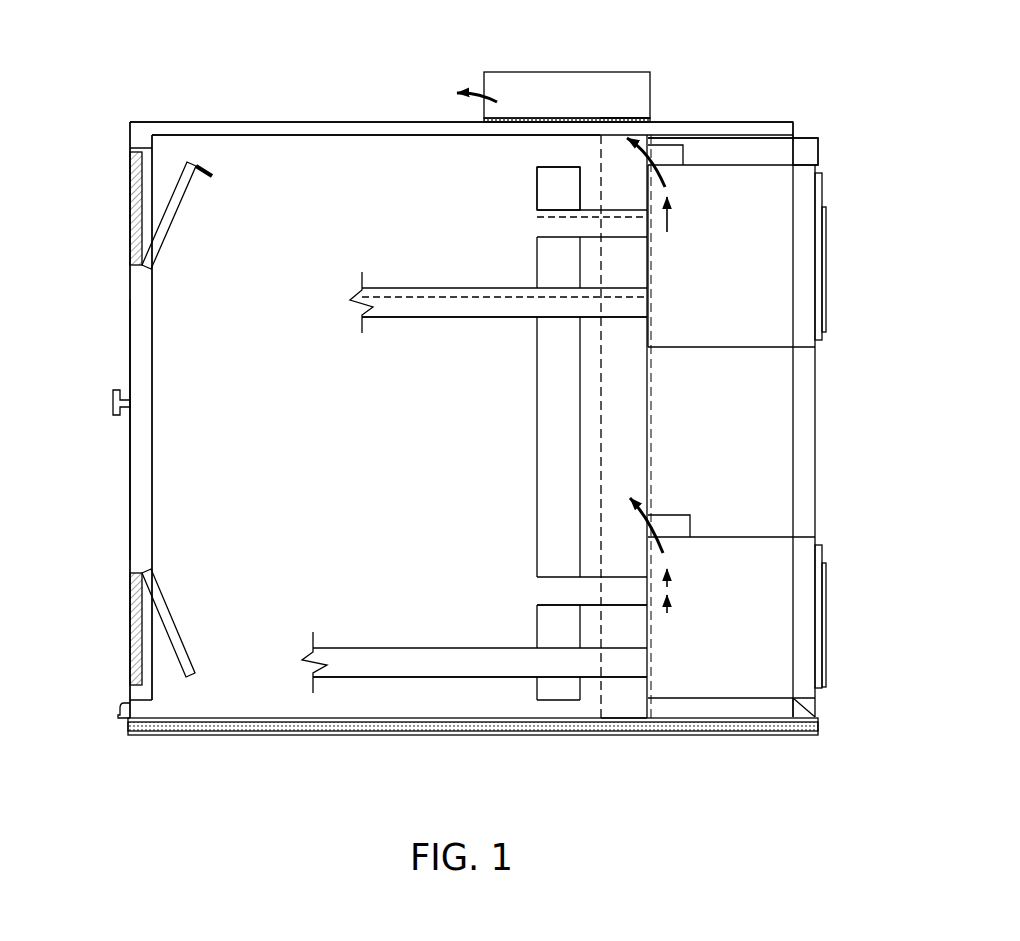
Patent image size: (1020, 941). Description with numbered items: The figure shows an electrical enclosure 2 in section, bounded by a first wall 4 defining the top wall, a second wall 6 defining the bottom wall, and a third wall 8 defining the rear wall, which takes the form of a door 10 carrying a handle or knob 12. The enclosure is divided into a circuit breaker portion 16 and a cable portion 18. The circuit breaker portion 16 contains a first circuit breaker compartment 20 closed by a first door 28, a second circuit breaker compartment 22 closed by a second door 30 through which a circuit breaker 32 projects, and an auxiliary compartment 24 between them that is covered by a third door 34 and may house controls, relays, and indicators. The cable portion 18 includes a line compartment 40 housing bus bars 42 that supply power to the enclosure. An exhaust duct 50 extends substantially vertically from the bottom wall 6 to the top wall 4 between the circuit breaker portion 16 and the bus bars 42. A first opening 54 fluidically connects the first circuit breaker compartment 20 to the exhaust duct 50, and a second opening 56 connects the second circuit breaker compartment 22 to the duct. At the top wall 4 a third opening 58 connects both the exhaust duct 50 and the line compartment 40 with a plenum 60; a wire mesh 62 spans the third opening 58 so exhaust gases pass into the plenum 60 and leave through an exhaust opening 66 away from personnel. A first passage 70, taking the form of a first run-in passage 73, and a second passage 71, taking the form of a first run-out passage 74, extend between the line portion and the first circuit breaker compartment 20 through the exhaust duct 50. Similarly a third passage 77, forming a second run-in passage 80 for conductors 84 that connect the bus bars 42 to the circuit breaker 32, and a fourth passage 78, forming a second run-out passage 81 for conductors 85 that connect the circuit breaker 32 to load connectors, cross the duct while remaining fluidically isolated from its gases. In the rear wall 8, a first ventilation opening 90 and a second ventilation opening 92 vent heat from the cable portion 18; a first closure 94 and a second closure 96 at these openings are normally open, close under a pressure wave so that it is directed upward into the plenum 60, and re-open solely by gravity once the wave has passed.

The electrical enclosure 2 is at (158, 84).
The first wall 4 is at (297, 116).
The second wall 6 is at (293, 740).
The third wall 8 is at (118, 478).
The door 10 is at (130, 505).
The handle or knob 12 is at (113, 400).
The circuit breaker portion 16 is at (810, 157).
The cable portion 18 is at (240, 126).
The first circuit breaker compartment 20 is at (772, 644).
The second circuit breaker compartment 22 is at (773, 319).
The auxiliary compartment 24 is at (768, 484).
The first door 28 is at (818, 563).
The second door 30 is at (824, 184).
The circuit breaker 32 is at (838, 226).
The third door 34 is at (812, 430).
The line compartment 40 is at (331, 168).
The bus bars 42 is at (543, 541).
The exhaust duct 50 is at (595, 506).
The first passage or opening 54 is at (666, 553).
The second passage or opening 56 is at (667, 186).
The third opening or outlet 58 is at (602, 107).
The plenum 60 is at (481, 56).
The wire mesh 62 is at (556, 117).
The exhaust opening 66 is at (484, 84).
The first passage 70 is at (558, 571).
The second passage 71 is at (486, 682).
The first run-in passage 73 is at (563, 597).
The first run-out passage 74 is at (400, 680).
The third passage 77 is at (558, 207).
The fourth passage 78 is at (502, 332).
The second run-in passage 80 is at (594, 232).
The second run-out passage 81 is at (445, 318).
The conductors 84 is at (557, 221).
The conductors 85 is at (412, 287).
The first ventilation opening 90 is at (125, 640).
The second ventilation opening 92 is at (124, 188).
The first closure 94 is at (186, 636).
The second closure 96 is at (184, 212).